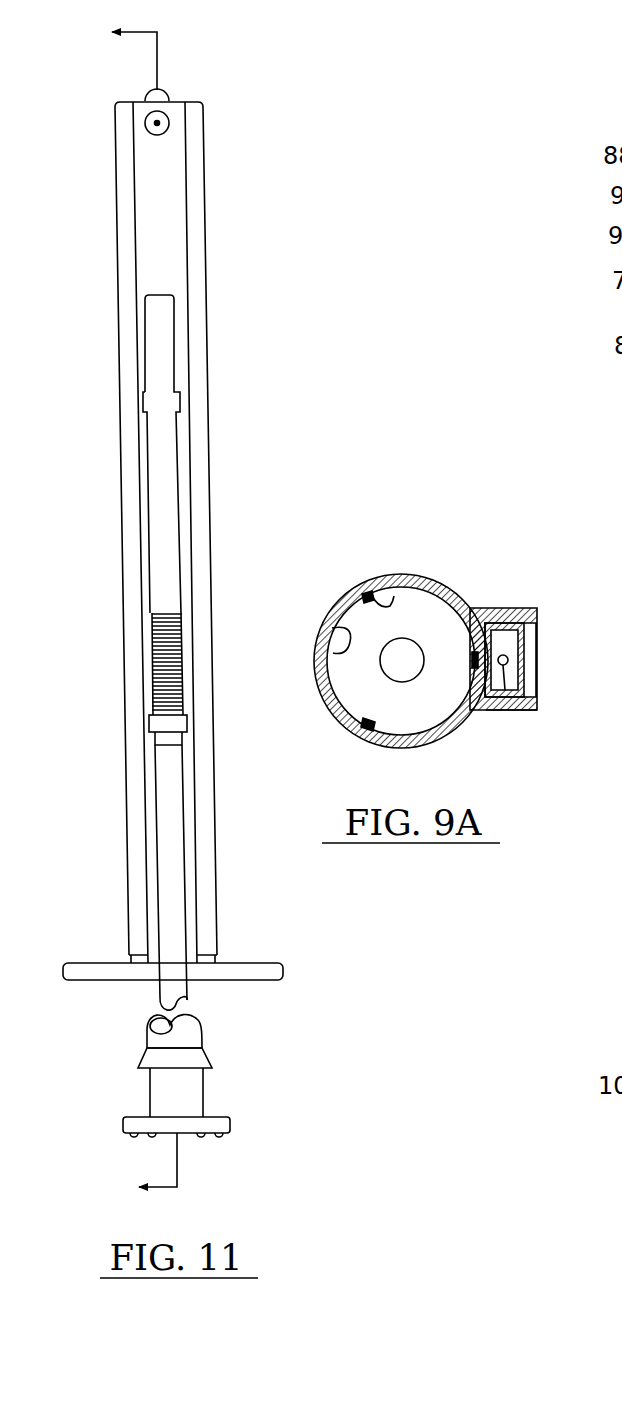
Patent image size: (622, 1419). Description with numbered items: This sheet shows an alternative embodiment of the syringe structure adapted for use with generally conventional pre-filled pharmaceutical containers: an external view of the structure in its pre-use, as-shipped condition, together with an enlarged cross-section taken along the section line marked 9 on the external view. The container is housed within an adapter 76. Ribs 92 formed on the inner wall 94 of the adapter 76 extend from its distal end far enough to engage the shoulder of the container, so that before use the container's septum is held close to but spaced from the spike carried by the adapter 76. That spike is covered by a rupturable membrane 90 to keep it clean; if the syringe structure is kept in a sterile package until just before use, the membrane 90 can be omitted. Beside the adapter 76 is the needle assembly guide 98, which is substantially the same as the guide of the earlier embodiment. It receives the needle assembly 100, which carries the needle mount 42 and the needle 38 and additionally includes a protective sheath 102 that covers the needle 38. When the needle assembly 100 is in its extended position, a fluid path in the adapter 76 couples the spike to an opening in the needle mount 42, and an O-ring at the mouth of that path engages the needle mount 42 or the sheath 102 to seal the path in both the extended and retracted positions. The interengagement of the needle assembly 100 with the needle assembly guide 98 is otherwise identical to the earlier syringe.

In FIG. 11, the section line 9- 9 is at (144, 610).
In FIG. 9A, the needle 38 is at (512, 713).
In FIG. 9A, the needle mount 42 is at (526, 652).
In FIG. 11, the adapter 76 is at (120, 468).
In FIG. 9A, the adapter 76 is at (462, 582).
In FIG. 9A, the rupturable membrane 90 is at (387, 672).
In FIG. 9A, the ribs 92 is at (393, 598).
In FIG. 9A, the inner wall 94 is at (328, 623).
In FIG. 11, the needle assembly guide 98 is at (140, 243).
In FIG. 9A, the needle assembly guide 98 is at (540, 605).
In FIG. 11, the needle assembly 100 is at (157, 723).
In FIG. 11, the protective sheath 102 is at (165, 92).